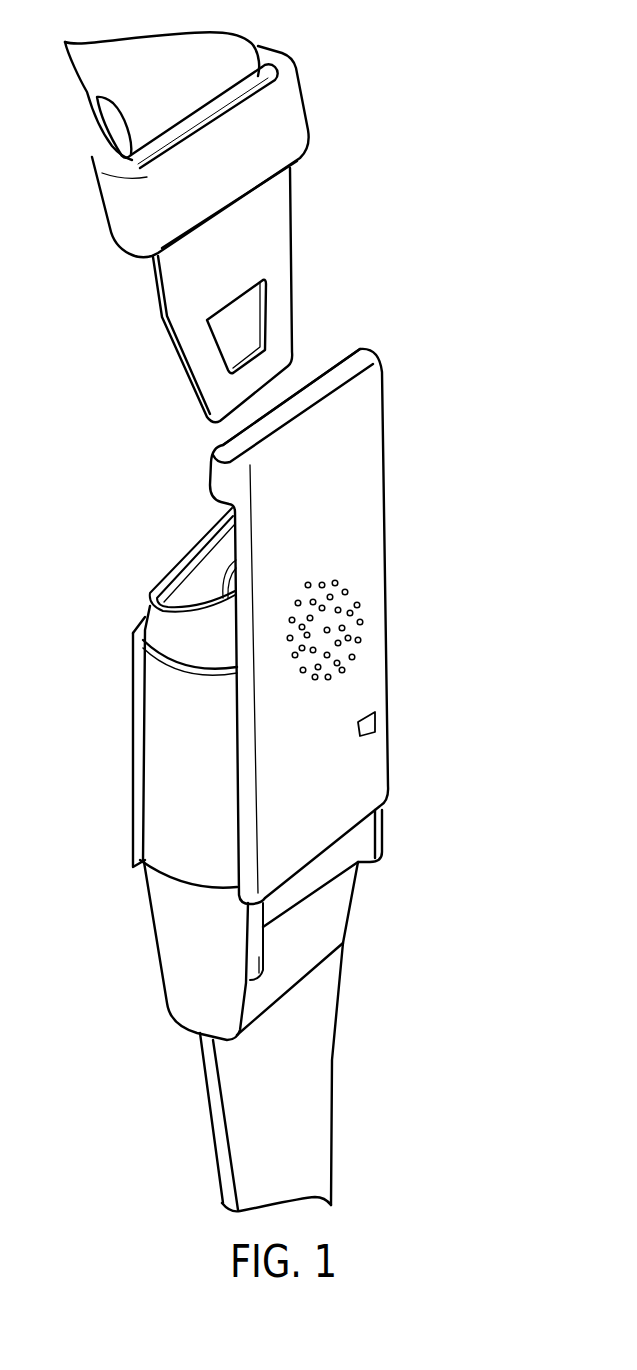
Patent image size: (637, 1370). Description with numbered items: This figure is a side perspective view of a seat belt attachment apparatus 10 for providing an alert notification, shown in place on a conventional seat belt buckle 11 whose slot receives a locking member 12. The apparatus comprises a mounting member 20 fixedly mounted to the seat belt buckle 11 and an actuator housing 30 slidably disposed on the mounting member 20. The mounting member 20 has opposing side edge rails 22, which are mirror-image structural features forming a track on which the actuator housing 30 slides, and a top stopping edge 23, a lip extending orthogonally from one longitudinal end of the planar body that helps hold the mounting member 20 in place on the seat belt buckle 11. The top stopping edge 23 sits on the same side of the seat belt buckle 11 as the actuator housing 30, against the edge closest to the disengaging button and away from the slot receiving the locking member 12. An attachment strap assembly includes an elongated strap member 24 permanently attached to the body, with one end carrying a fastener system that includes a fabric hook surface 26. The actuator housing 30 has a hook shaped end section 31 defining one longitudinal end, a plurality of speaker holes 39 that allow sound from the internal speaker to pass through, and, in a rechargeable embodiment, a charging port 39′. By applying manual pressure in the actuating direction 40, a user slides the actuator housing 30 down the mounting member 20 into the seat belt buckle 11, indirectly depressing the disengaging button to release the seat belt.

The seat belt attachment apparatus 10 is at (437, 781).
The seat belt buckle 11 is at (175, 945).
The locking member 12 is at (180, 280).
The mounting member 20 is at (365, 843).
The edge rails 22 is at (262, 957).
The top stopping edge 23 is at (212, 572).
The strap member 24 is at (204, 760).
The fabric hook surface 26 is at (142, 687).
The actuator housing 30 is at (367, 495).
The hook shaped end section 31 is at (350, 358).
The speaker holes 39 is at (360, 605).
The charging port 39′ is at (370, 723).
The actuating direction 40 is at (452, 392).